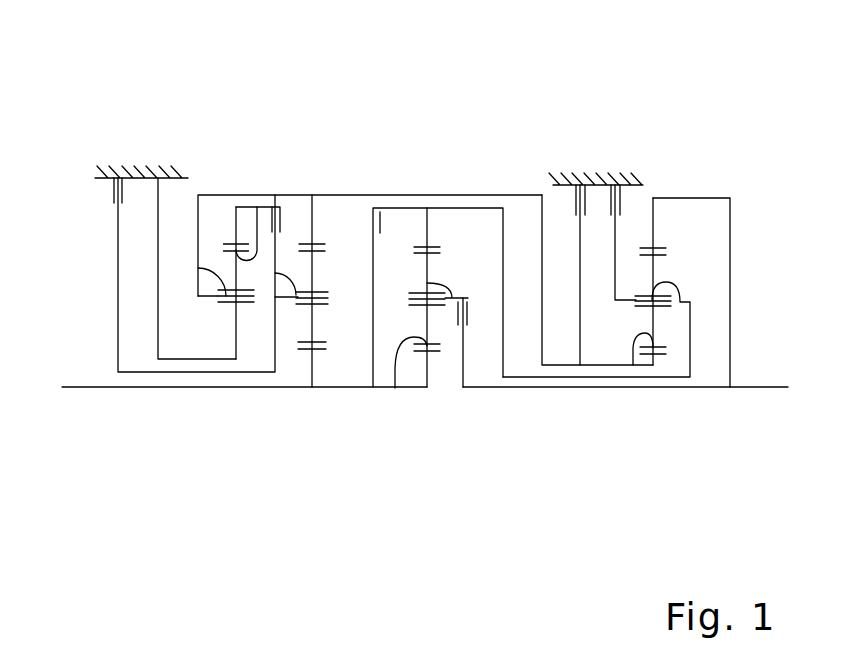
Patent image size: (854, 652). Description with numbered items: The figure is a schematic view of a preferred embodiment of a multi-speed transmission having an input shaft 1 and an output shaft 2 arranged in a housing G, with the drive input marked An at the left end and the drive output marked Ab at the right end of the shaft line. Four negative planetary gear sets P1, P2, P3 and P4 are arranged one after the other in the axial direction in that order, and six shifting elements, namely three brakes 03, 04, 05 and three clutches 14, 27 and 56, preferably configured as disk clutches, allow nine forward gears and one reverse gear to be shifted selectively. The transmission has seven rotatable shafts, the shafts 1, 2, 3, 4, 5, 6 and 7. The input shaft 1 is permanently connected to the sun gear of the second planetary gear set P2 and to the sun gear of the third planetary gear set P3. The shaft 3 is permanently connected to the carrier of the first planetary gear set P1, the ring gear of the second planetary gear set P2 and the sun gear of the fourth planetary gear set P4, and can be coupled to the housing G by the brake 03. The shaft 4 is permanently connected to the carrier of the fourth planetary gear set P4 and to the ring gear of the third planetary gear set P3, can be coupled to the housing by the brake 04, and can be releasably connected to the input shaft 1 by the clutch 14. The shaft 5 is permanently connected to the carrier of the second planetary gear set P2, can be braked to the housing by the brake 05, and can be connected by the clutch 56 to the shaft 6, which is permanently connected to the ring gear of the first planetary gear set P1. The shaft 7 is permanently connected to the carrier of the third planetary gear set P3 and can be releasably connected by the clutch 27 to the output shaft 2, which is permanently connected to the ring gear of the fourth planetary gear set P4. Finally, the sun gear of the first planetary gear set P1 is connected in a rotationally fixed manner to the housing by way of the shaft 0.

The brake 05 is at (113, 200).
The first planetary gear set P1 is at (223, 232).
The shaft 6 is at (228, 243).
The clutch 56 is at (272, 207).
The second planetary gear set P2 is at (307, 232).
The shaft 3 is at (338, 194).
The clutch 14 is at (380, 212).
The shaft 4 is at (418, 208).
The third planetary gear set P3 is at (437, 238).
The brake 03 is at (576, 205).
The housing G is at (628, 188).
The brake 04 is at (623, 206).
The fourth planetary gear set P4 is at (640, 263).
The drive input An is at (90, 387).
The shaft 0 is at (223, 360).
The shaft 5 is at (298, 304).
The input shaft 1 is at (336, 388).
The shaft 7 is at (428, 288).
The clutch 27 is at (466, 310).
The output shaft 2 is at (640, 263).
The drive output Ab is at (748, 390).